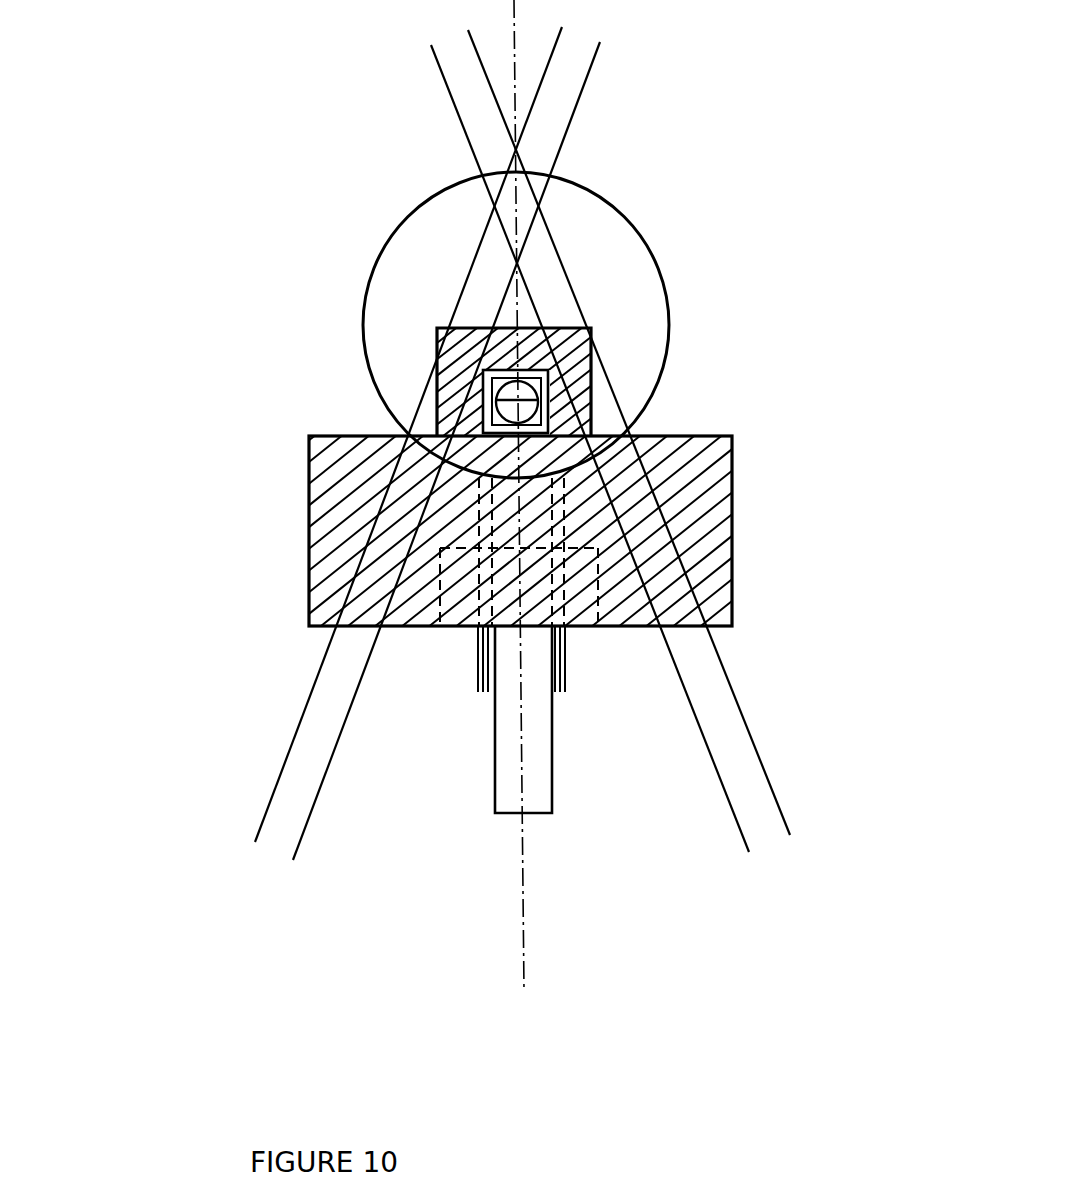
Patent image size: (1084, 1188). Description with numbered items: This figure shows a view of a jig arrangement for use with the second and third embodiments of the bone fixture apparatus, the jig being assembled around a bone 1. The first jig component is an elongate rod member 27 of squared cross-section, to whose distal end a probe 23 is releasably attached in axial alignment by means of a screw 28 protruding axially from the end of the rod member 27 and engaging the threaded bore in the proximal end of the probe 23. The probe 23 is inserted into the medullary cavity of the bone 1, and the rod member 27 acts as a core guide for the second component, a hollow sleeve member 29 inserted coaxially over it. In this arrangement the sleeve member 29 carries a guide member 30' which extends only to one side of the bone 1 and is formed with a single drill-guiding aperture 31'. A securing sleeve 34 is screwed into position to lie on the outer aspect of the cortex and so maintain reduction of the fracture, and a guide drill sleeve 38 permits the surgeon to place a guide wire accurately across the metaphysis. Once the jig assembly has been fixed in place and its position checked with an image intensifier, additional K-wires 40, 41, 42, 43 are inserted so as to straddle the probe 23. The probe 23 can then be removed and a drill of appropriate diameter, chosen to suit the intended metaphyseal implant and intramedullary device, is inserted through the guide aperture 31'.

The bone 1 is at (628, 268).
The probe 23 is at (560, 410).
The rod member 27 is at (573, 363).
The screw 28 is at (560, 410).
The sleeve member 29 is at (590, 376).
The guide member 30' is at (597, 531).
The drill-guiding aperture 31' is at (598, 701).
The securing sleeve 34 is at (480, 697).
The guide drill sleeve 38 is at (555, 798).
The K-wire 40 is at (338, 745).
The K-wire 41 is at (268, 802).
The K-wire 42 is at (717, 763).
The K-wire 43 is at (783, 817).